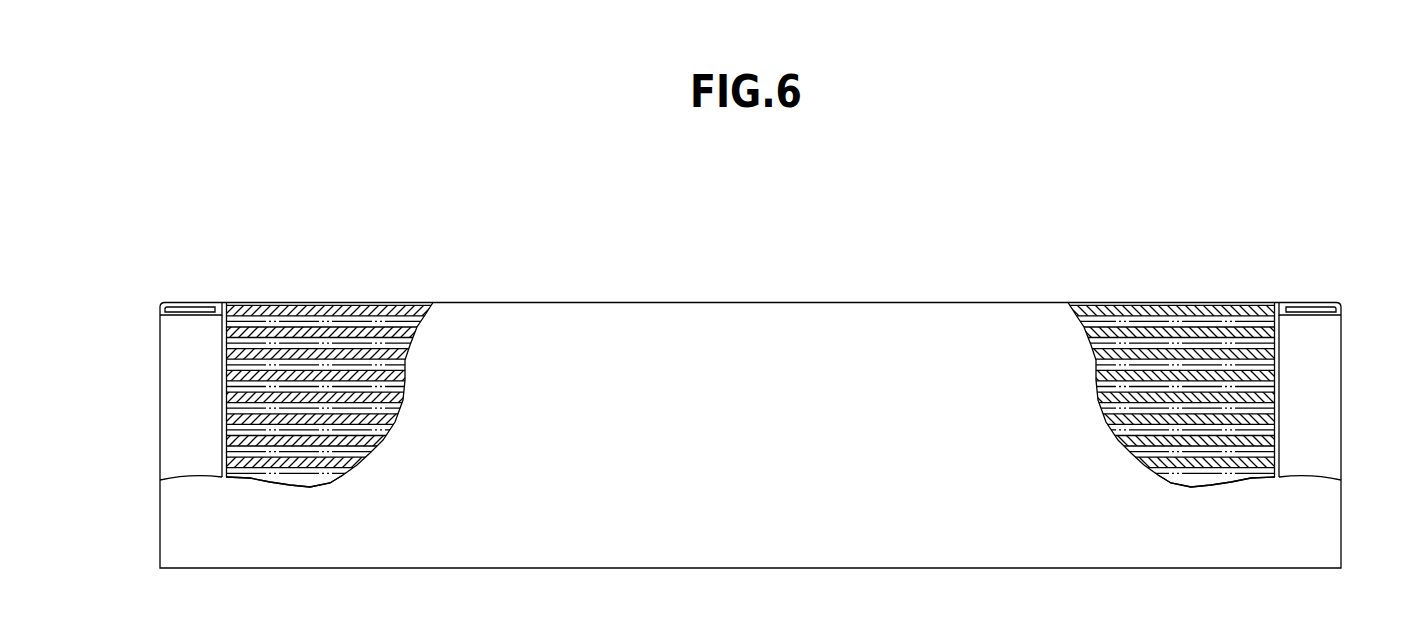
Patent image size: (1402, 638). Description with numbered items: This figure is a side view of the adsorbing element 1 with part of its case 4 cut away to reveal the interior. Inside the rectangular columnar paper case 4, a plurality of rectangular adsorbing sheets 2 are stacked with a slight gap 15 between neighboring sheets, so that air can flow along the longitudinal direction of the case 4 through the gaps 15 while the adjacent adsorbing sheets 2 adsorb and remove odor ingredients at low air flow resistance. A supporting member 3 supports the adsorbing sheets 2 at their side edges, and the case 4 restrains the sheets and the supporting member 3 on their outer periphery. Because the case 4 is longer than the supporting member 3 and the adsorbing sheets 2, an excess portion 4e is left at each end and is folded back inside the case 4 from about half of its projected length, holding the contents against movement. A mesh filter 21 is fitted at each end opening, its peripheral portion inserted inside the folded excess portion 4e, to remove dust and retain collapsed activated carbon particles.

The adsorbing element 1 is at (822, 276).
The adsorbing sheet 2 is at (377, 333).
The supporting member 3 is at (217, 407).
The case 4 is at (568, 337).
The excess portion 4e is at (192, 301).
The gap 15 is at (308, 347).
The mesh filter 21 is at (221, 324).